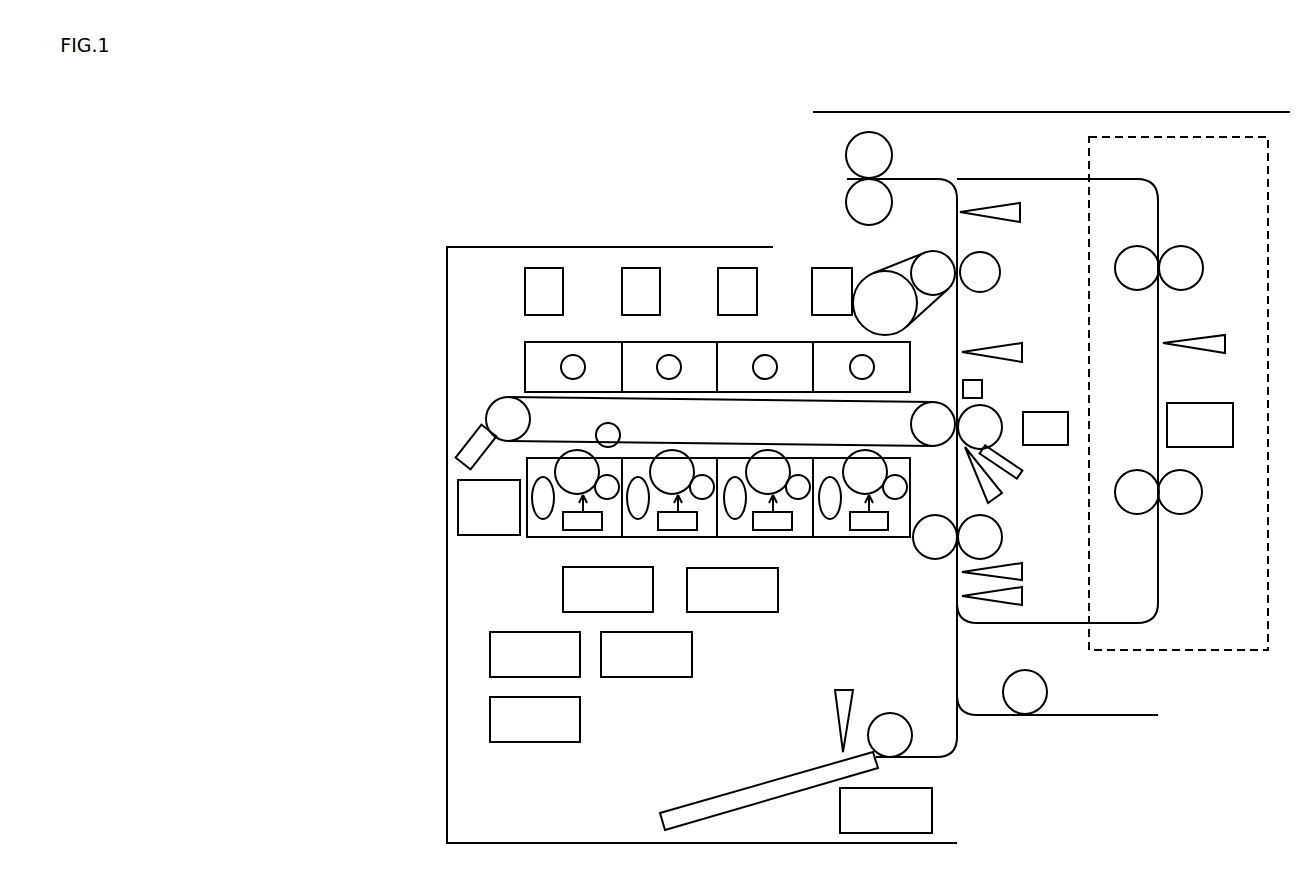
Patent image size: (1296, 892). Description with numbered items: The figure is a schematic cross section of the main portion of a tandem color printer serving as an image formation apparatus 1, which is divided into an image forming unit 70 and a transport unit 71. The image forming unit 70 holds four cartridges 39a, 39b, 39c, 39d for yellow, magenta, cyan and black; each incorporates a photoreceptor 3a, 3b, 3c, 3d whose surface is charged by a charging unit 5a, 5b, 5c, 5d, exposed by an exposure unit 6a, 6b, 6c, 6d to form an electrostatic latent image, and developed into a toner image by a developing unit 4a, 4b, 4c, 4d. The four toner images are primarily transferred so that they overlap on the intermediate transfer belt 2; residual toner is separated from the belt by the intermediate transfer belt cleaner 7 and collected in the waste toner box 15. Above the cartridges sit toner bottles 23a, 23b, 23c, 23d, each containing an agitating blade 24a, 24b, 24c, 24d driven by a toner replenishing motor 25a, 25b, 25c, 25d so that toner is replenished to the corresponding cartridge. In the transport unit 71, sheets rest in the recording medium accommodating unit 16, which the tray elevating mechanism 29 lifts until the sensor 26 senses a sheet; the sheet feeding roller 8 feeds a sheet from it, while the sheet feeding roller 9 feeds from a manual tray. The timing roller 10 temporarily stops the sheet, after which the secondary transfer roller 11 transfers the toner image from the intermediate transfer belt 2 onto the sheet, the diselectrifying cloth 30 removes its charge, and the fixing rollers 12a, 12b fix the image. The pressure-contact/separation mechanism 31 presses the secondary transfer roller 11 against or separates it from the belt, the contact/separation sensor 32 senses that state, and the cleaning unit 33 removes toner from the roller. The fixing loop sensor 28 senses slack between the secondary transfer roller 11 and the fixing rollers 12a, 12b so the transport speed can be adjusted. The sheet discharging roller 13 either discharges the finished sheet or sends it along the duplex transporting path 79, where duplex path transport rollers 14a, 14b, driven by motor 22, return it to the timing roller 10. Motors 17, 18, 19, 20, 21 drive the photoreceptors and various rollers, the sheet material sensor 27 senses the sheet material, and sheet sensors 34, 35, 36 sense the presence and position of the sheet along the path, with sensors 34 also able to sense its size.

The image formation apparatus 1 is at (414, 89).
The intermediate transfer belt 2 is at (714, 400).
The photoreceptor 3a is at (577, 472).
The photoreceptor 3b is at (672, 472).
The photoreceptor 3c is at (768, 472).
The photoreceptor 3d is at (865, 472).
The developing unit 4a is at (543, 498).
The developing unit 4b is at (638, 498).
The developing unit 4c is at (735, 498).
The developing unit 4d is at (830, 498).
The charging unit 5a is at (609, 499).
The charging unit 5b is at (704, 499).
The charging unit 5c is at (800, 499).
The charging unit 5d is at (897, 499).
The exposure unit 6a is at (582, 513).
The exposure unit 6b is at (677, 513).
The exposure unit 6c is at (772, 513).
The exposure unit 6d is at (869, 513).
The intermediate transfer belt cleaner 7 is at (476, 447).
The sheet feeding roller 8 is at (890, 735).
The sheet feeding roller 9 is at (1025, 692).
The timing roller 10 is at (980, 537).
The secondary transfer roller 11 is at (980, 427).
The fixing roller 12a is at (980, 272).
The fixing roller 12b is at (904, 293).
The sheet discharging roller 13 is at (846, 153).
The duplex path transport roller 14a is at (1159, 268).
The duplex path transport roller 14b is at (1158, 492).
The waste toner box 15 is at (489, 507).
The recording medium accommodating unit 16 is at (693, 805).
The motor 17 is at (535, 719).
The motor 18 is at (535, 654).
The motor 19 is at (646, 654).
The motor 20 is at (608, 589).
The motor 21 is at (732, 590).
The motor 22 is at (1200, 425).
The toner bottle 23a is at (541, 356).
The toner bottle 23b is at (638, 356).
The toner bottle 23c is at (734, 356).
The toner bottle 23d is at (830, 356).
The agitating blade 24a is at (576, 356).
The agitating blade 24b is at (672, 356).
The agitating blade 24c is at (769, 356).
The agitating blade 24d is at (875, 367).
The toner replenishing motor 25a is at (544, 291).
The toner replenishing motor 25b is at (641, 291).
The toner replenishing motor 25c is at (737, 291).
The toner replenishing motor 25d is at (832, 291).
The sensor 26 is at (832, 695).
The sheet material sensor 27 is at (1022, 572).
The fixing loop sensor 28 is at (1022, 352).
The tray elevating mechanism 29 is at (886, 810).
The diselectrifying cloth 30 is at (983, 389).
The pressure-contact/separation mechanism 31 is at (1045, 428).
The contact/separation sensor 32 is at (1000, 498).
The cleaning unit 33 is at (1024, 470).
The sheet sensor 34 is at (1022, 596).
The sheet sensor 35 is at (1020, 212).
The sheet sensor 36 is at (1192, 338).
The cartridge 39a is at (549, 537).
The cartridge 39b is at (644, 537).
The cartridge 39c is at (740, 537).
The cartridge 39d is at (836, 537).
The image forming unit 70 is at (522, 226).
The transport unit 71 is at (1126, 90).
The duplex transporting path 79 is at (1086, 148).